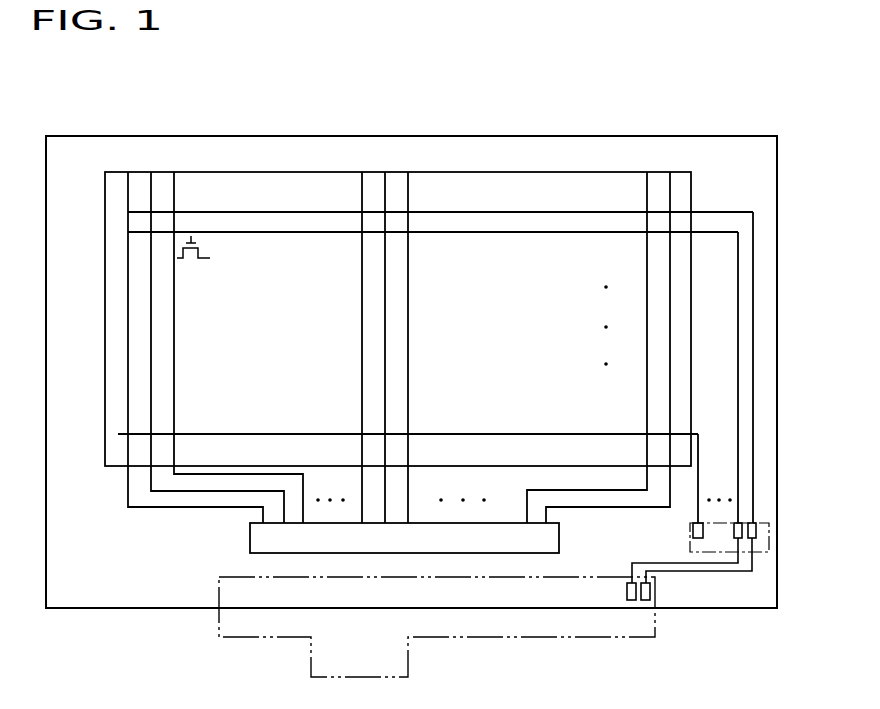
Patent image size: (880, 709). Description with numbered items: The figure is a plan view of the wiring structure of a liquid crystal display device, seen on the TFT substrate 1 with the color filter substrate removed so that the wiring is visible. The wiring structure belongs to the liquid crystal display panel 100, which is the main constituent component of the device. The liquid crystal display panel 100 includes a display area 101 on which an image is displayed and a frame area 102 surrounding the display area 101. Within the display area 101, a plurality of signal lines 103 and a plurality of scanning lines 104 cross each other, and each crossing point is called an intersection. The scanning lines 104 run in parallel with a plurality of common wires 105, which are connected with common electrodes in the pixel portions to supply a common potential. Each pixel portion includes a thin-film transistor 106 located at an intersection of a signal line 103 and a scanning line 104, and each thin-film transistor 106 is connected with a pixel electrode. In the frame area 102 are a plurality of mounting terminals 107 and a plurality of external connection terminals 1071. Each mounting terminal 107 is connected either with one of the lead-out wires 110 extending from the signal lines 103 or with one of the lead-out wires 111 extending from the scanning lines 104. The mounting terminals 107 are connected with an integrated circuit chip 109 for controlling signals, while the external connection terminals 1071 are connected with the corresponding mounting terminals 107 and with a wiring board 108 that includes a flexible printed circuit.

The TFT substrate 1 is at (60, 188).
The liquid crystal display panel 100 is at (232, 135).
The display area 101 is at (604, 193).
The frame area 102 is at (723, 193).
The signal line 103 is at (363, 192).
The scanning line 104 is at (485, 210).
The common wire 105 is at (500, 434).
The thin-film transistor 106 is at (192, 260).
The mounting terminal 107 is at (757, 530).
The wiring board 108 is at (219, 625).
The integrated circuit chip 109 is at (250, 543).
The lead-out wire 110 is at (278, 473).
The lead-out wire 111 is at (755, 478).
The external connection terminal 1071 is at (647, 592).